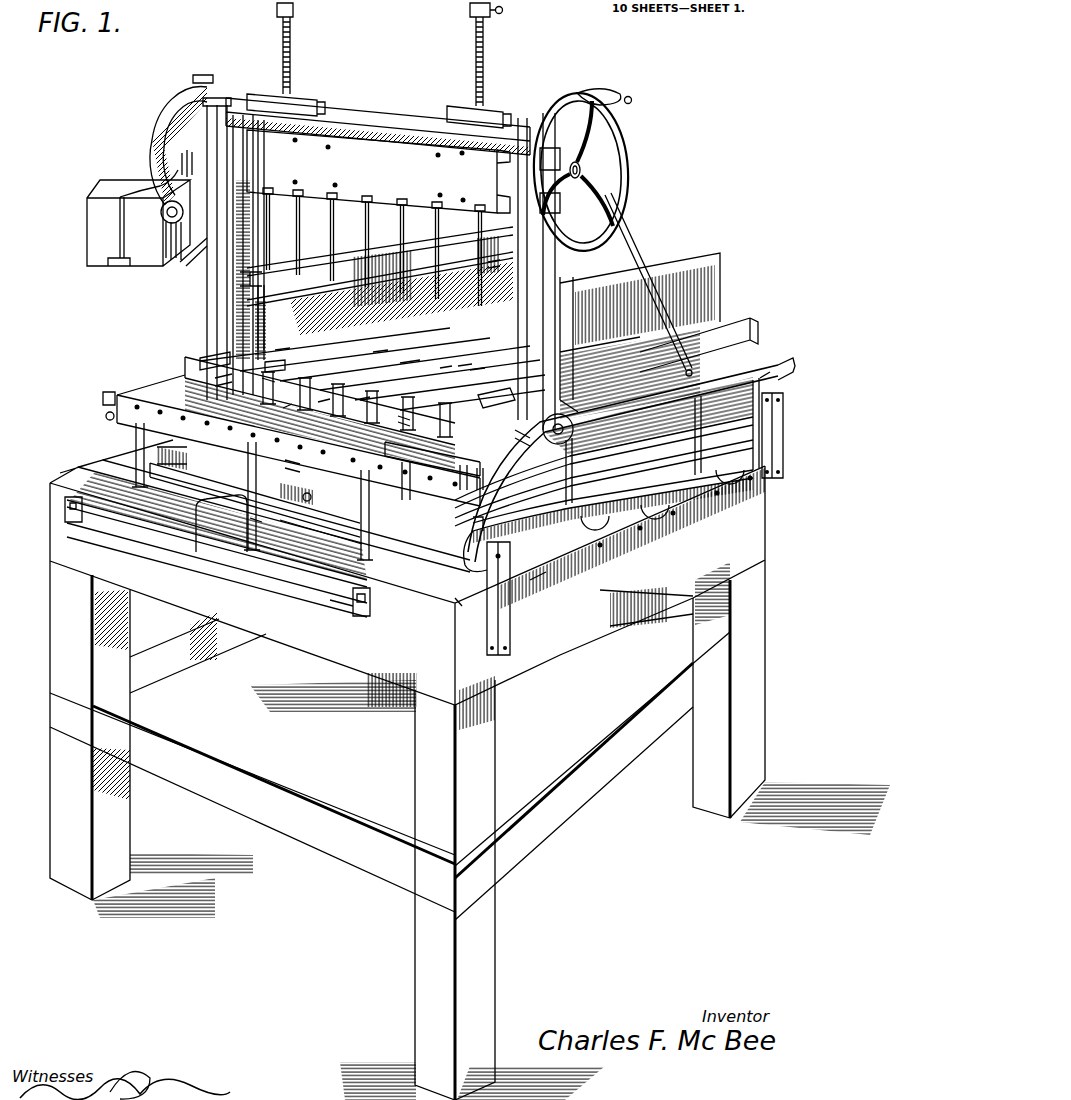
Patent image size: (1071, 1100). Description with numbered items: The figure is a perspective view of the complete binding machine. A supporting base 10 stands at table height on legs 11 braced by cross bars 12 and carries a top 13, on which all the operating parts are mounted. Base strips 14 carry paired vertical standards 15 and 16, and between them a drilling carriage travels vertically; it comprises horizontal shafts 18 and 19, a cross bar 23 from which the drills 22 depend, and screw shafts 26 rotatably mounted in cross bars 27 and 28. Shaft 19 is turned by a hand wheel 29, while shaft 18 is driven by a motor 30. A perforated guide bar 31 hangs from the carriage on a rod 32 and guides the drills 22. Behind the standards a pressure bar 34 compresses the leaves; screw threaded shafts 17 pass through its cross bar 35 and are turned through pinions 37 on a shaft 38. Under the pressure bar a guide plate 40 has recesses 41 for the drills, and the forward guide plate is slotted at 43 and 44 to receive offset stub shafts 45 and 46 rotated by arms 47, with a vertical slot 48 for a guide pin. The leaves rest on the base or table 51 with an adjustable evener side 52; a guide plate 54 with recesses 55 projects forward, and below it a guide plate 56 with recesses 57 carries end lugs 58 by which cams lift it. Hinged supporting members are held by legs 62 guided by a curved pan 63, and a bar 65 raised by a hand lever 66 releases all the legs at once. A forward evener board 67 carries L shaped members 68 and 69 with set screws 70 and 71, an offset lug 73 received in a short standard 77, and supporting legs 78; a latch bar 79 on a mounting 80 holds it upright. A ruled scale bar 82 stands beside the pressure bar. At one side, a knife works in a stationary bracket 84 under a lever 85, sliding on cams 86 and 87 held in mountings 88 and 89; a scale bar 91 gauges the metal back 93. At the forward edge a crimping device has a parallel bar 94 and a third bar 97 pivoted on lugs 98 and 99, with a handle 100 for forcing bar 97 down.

The supporting base 10 is at (407, 633).
The legs 11 is at (62, 640).
The cross bars 12 is at (207, 652).
The top 13 is at (301, 532).
The base strips 14 is at (118, 462).
The standards 15 is at (553, 259).
The standards 16 is at (233, 300).
The screw threaded shafts 17 is at (264, 292).
The shaft 18 is at (497, 178).
The shaft 19 is at (497, 163).
The drills 22 is at (334, 216).
The cross bar 23 is at (497, 203).
The screw shafts 26 is at (288, 58).
The cross bar 27 is at (235, 117).
The cross bar 28 is at (400, 120).
The hand wheel 29 is at (624, 147).
The motor 30 is at (88, 215).
The guide bar 31 is at (425, 303).
The rod 32 is at (240, 207).
The pressure bar 34 is at (420, 350).
The cross bar 35 is at (377, 256).
The pinions 37 is at (267, 380).
The shaft 38 is at (320, 405).
The guide plate 40 is at (340, 360).
The recesses 41 is at (407, 366).
The slot 43 is at (288, 360).
The slot 44 is at (477, 373).
The stub shaft 45 is at (285, 355).
The stub shaft 46 is at (465, 367).
The levers or arms 47 is at (446, 368).
The vertical slot 48 is at (380, 353).
The base or table 51 is at (737, 330).
The evener side 52 is at (492, 262).
The guide plate 54 is at (481, 412).
The recesses 55 is at (283, 393).
The guide plate 56 is at (221, 383).
The recesses 57 is at (360, 404).
The lug 58 is at (212, 362).
The legs 62 is at (400, 419).
The curved pan 63 is at (290, 462).
The bar 65 is at (187, 465).
The hand lever 66 is at (153, 422).
The forward evener board 67 is at (284, 410).
The L shaped member 68 is at (105, 402).
The L shaped member 69 is at (414, 458).
The set screw 70 is at (105, 415).
The set screw 71 is at (402, 442).
The offset lug member 73 is at (460, 482).
The short standard 77 is at (491, 488).
The supporting legs 78 is at (136, 428).
The latch bar 79 is at (337, 508).
The mounting 80 is at (250, 483).
The ruled scale bar 82 is at (257, 280).
The stationary bracket 84 is at (659, 532).
The lever 85 is at (727, 376).
The cam 86 is at (507, 536).
The cam 87 is at (778, 360).
The mounting 88 is at (494, 610).
The mounting 89 is at (783, 443).
The scale bar 91 is at (458, 596).
The metal back 93 is at (538, 585).
The parallel bar 94 is at (212, 562).
The third bar 97 is at (130, 523).
The lug 98 is at (65, 518).
The lug 99 is at (372, 612).
The handle 100 is at (252, 520).